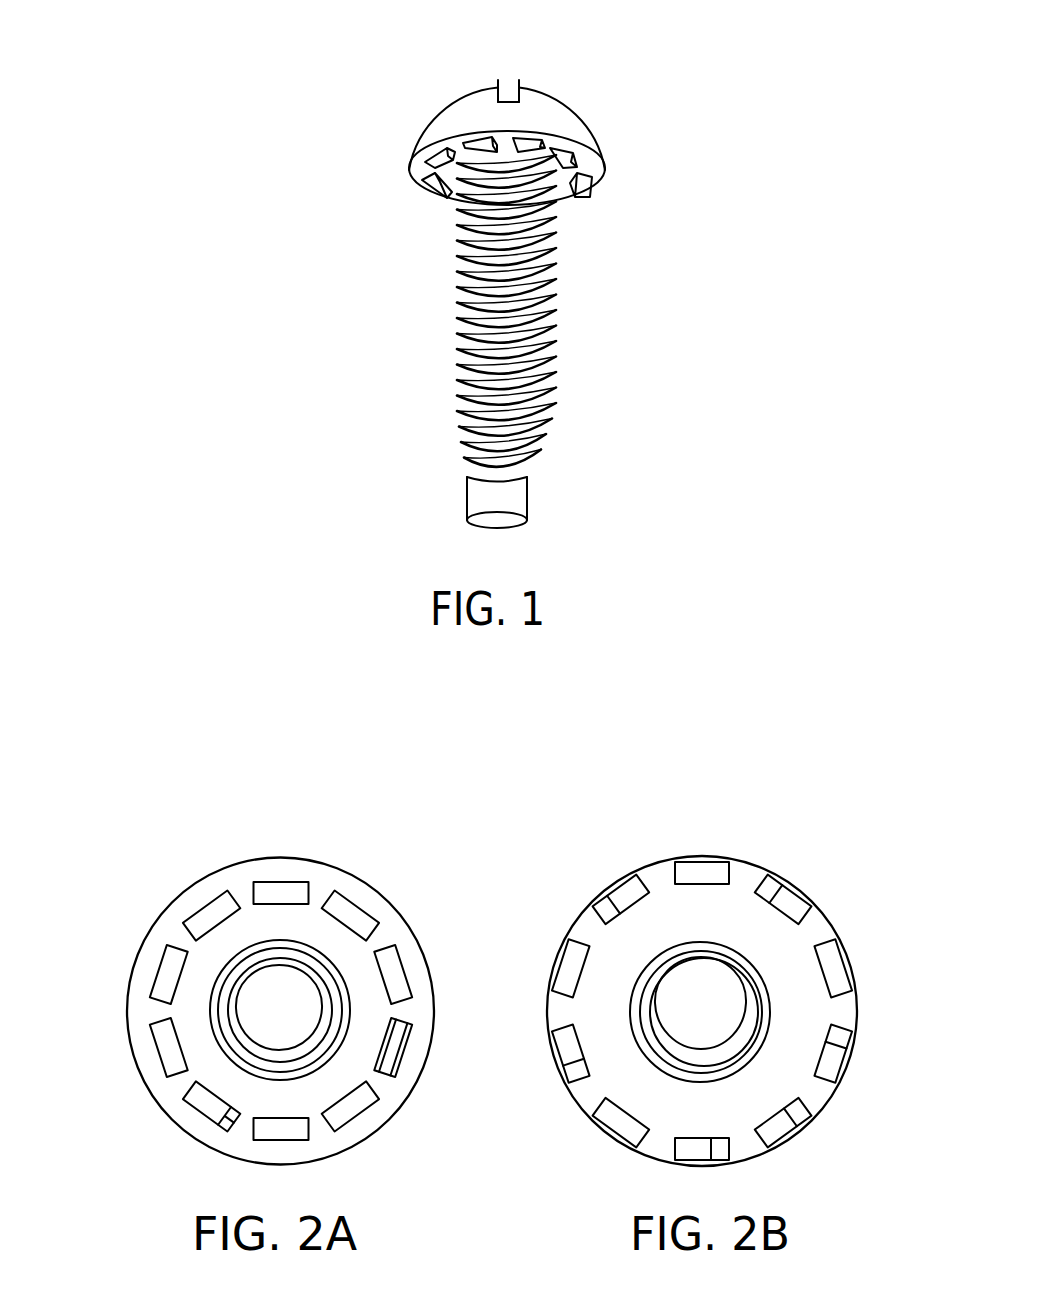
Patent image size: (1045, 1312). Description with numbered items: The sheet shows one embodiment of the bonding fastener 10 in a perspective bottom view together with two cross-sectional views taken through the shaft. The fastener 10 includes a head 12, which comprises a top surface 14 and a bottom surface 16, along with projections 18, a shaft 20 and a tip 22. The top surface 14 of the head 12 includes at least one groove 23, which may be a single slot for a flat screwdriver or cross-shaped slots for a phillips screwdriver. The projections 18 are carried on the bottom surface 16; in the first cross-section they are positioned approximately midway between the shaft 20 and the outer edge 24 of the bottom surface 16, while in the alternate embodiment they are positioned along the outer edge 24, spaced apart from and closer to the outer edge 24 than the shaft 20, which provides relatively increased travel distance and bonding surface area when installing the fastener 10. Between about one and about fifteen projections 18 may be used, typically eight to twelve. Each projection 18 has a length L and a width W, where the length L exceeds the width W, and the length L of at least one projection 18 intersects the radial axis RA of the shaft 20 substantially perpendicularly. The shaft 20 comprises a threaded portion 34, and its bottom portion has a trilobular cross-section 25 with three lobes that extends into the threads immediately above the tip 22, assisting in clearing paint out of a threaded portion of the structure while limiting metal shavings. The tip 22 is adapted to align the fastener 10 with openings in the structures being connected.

In FIG. 1, the bonding fastener 10 is at (405, 90).
In FIG. 1, the head 12 is at (597, 138).
In FIG. 1, the top surface 14 is at (562, 100).
In FIG. 1, the bottom surface 16 is at (605, 182).
In FIG. 2A, the bottom surface 16 is at (390, 918).
In FIG. 2B, the bottom surface 16 is at (812, 925).
In FIG. 1, the projections 18 is at (580, 205).
In FIG. 2A, the projections 18 is at (400, 967).
In FIG. 2B, the projections 18 is at (840, 982).
In FIG. 1, the shaft 20 is at (555, 351).
In FIG. 2A, the shaft 20 is at (220, 967).
In FIG. 2B, the shaft 20 is at (700, 1012).
In FIG. 1, the tip 22 is at (528, 500).
In FIG. 1, the groove 23 is at (510, 85).
In FIG. 2A, the outer edge 24 is at (358, 1142).
In FIG. 2B, the outer edge 24 is at (823, 1118).
In FIG. 2A, the trilobular cross-section 25 is at (263, 958).
In FIG. 2B, the trilobular cross-section 25 is at (680, 953).
In FIG. 1, the threaded portion 34 is at (545, 430).
In FIG. 2A, the length L is at (393, 1047).
In FIG. 2B, the length L is at (785, 1115).
In FIG. 2A, the radial axis RA is at (277, 1008).
In FIG. 2B, the radial axis RA is at (705, 1010).
In FIG. 2A, the width W is at (197, 1088).
In FIG. 2B, the width W is at (707, 1148).